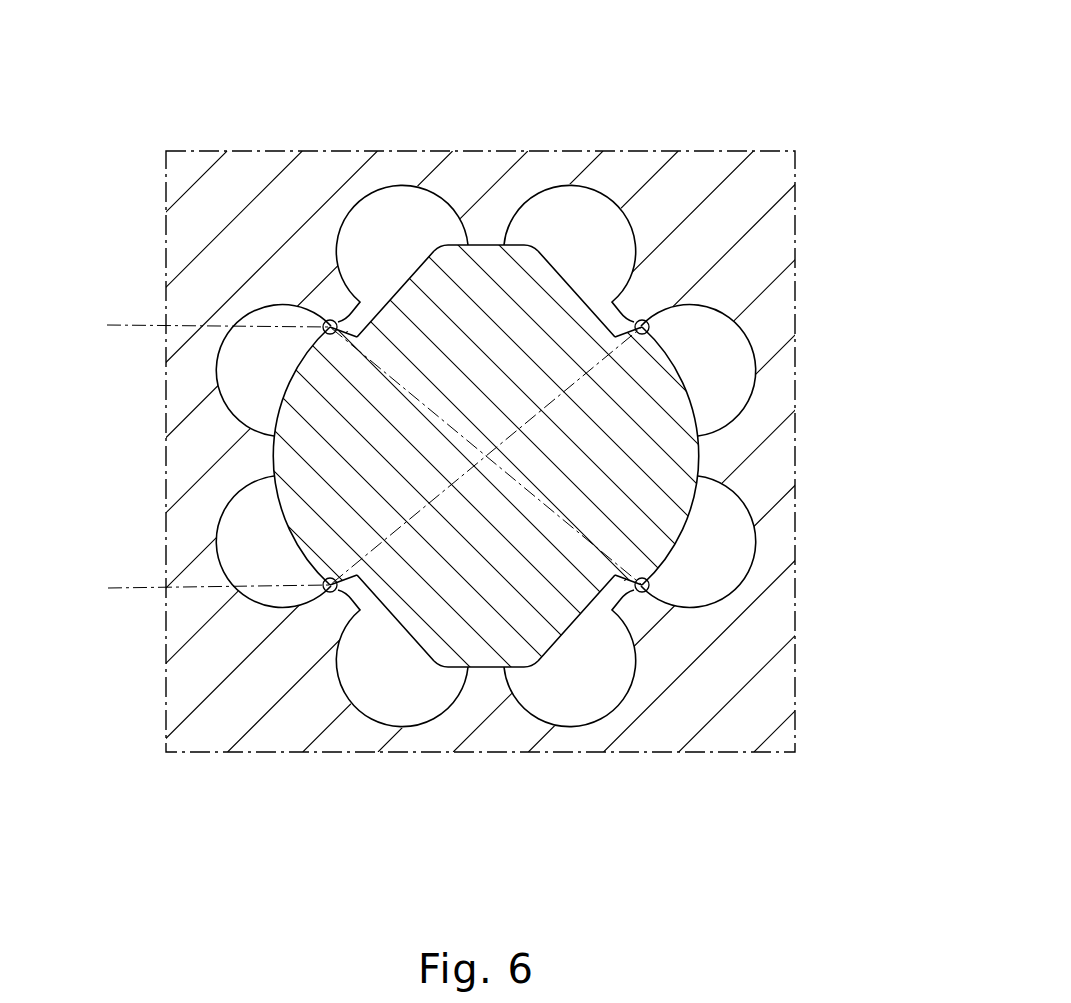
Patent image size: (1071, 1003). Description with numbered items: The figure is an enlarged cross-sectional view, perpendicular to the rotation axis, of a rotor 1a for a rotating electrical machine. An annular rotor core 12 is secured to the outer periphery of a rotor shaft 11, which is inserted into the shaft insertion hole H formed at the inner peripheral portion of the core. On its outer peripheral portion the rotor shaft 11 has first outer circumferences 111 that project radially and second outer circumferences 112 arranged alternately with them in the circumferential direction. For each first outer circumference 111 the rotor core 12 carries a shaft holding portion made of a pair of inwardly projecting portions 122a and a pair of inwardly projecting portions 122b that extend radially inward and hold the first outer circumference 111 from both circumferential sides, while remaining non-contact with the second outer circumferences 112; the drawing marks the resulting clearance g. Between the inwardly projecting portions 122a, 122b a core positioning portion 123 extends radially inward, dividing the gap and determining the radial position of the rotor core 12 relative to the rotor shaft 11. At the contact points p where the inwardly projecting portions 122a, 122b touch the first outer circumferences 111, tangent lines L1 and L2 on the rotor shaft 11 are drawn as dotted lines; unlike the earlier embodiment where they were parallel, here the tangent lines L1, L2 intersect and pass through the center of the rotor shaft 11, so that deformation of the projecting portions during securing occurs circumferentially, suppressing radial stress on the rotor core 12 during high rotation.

The rotor 1a is at (720, 112).
The rotor core 12 is at (228, 193).
The core positioning portion 123 is at (483, 224).
The shaft insertion hole H is at (555, 680).
The inwardly projecting portion 122a is at (333, 318).
The inwardly projecting portion 122b is at (350, 602).
The gap g is at (357, 278).
The rotor shaft 11 is at (487, 630).
The first outer circumference 111 is at (326, 410).
The second outer circumference 112 is at (531, 307).
The contact point p is at (324, 324).
The tangent line L1 is at (358, 449).
The tangent line L2 is at (358, 464).